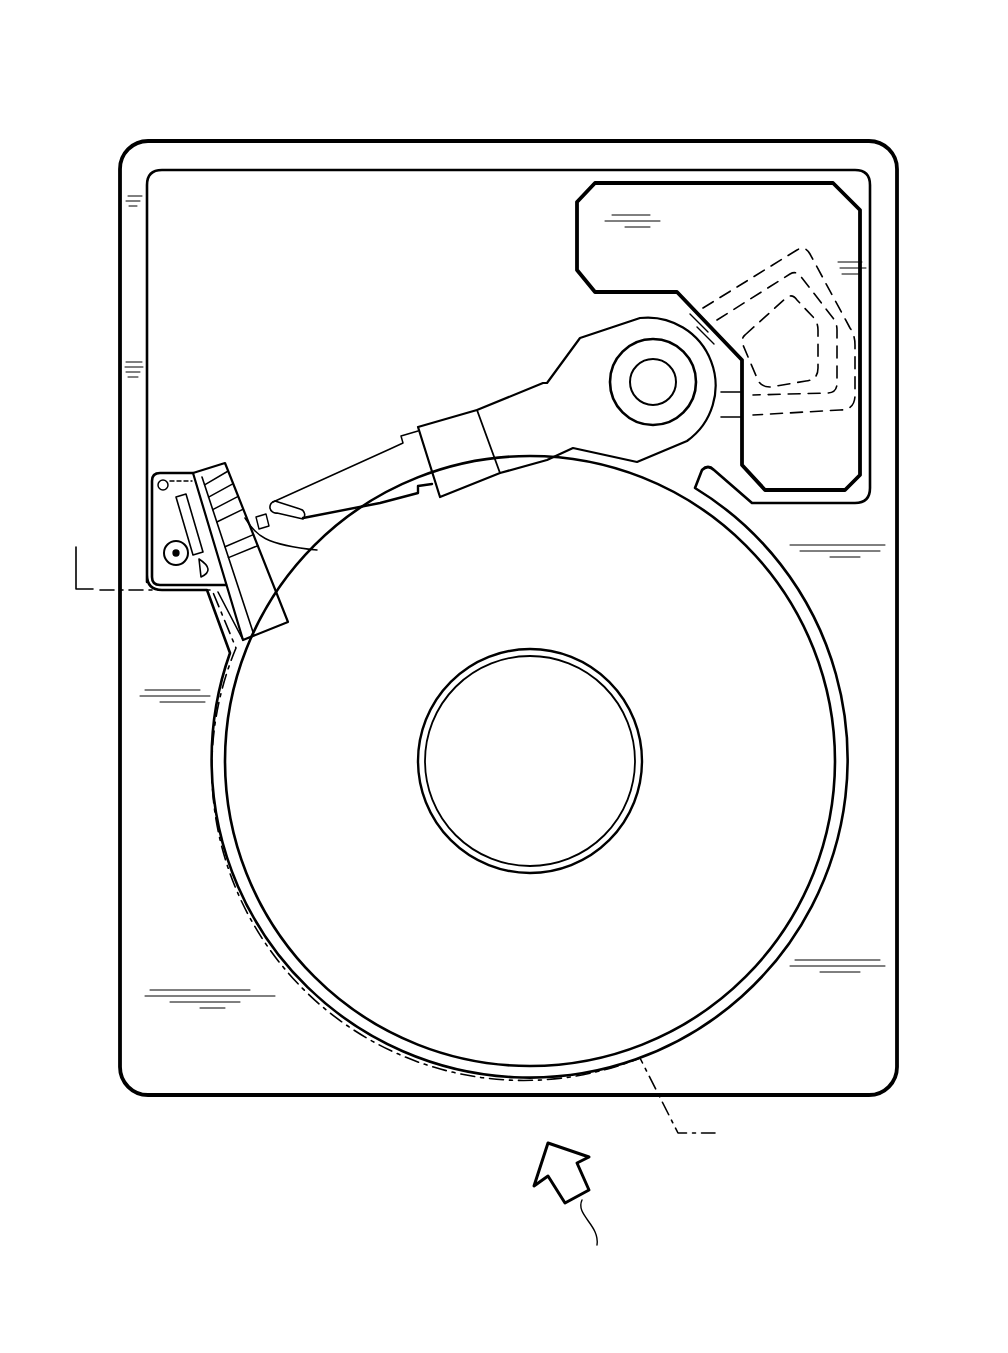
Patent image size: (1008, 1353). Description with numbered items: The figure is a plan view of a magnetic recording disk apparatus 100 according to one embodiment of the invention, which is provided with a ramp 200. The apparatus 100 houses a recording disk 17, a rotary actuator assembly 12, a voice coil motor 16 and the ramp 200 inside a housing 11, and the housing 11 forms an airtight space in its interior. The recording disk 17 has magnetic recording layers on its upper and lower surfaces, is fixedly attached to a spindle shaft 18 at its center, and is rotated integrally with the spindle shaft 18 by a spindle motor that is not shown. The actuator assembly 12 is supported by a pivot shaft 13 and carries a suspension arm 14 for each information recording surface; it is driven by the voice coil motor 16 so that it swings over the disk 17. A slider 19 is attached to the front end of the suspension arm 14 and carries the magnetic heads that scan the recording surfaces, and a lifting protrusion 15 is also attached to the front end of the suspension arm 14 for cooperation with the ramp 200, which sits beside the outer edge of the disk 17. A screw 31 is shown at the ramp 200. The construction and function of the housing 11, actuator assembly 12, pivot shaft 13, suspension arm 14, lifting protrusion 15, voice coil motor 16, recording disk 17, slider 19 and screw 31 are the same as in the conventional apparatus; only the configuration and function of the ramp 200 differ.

The magnetic recording disk apparatus 100 is at (527, 39).
The housing 11 is at (148, 915).
The rotary actuator assembly 12 is at (533, 407).
The pivot shaft 13 is at (640, 383).
The suspension arm 14 is at (383, 458).
The lifting protrusion 15 is at (245, 505).
The voice coil motor 16 is at (776, 207).
The recording disk 17 is at (270, 839).
The spindle shaft 18 is at (445, 746).
The slider 19 is at (317, 550).
The ramp 200 is at (180, 470).
The screw 31 is at (177, 565).